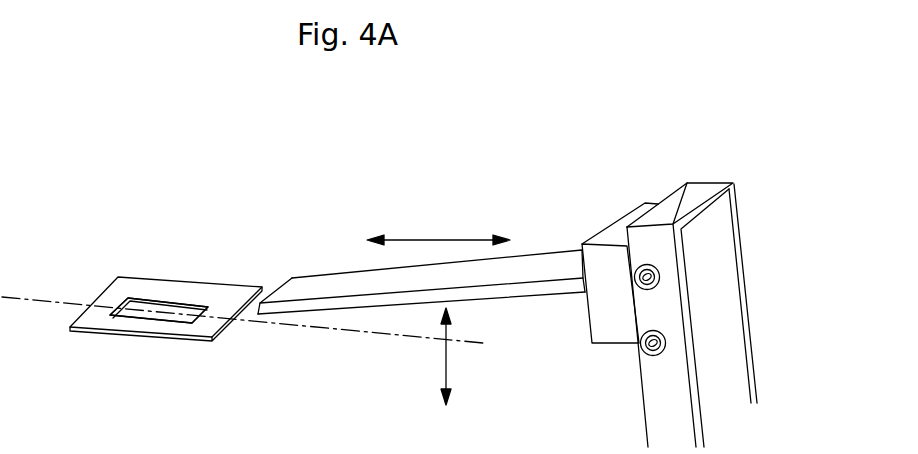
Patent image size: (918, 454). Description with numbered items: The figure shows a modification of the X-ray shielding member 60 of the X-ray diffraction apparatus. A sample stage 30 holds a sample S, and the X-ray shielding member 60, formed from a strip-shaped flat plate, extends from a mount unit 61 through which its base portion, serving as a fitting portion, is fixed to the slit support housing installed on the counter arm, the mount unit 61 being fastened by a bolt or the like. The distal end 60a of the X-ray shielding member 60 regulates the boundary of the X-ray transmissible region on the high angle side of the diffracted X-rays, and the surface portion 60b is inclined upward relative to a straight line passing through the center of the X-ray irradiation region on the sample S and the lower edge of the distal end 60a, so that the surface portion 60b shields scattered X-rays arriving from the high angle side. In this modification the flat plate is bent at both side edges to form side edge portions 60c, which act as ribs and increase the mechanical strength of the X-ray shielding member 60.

The sample stage 30 is at (152, 335).
The sample S is at (163, 307).
The X-ray shielding member 60 is at (408, 268).
The distal end 60a is at (277, 292).
The surface portion 60b is at (528, 268).
The side edge portions 60c is at (362, 303).
The mount unit 61 is at (598, 345).